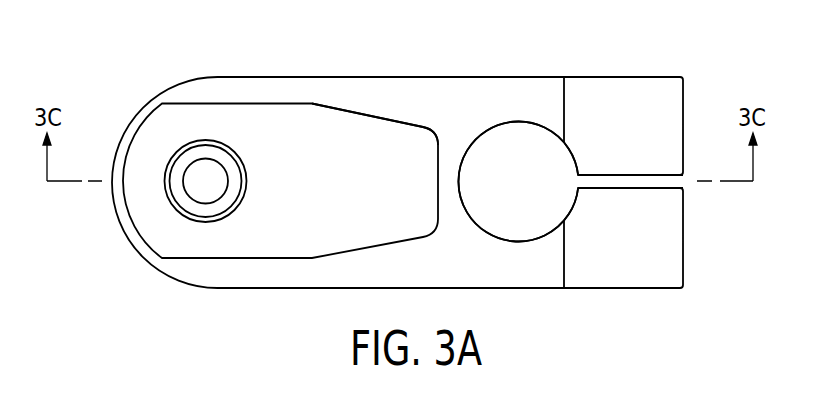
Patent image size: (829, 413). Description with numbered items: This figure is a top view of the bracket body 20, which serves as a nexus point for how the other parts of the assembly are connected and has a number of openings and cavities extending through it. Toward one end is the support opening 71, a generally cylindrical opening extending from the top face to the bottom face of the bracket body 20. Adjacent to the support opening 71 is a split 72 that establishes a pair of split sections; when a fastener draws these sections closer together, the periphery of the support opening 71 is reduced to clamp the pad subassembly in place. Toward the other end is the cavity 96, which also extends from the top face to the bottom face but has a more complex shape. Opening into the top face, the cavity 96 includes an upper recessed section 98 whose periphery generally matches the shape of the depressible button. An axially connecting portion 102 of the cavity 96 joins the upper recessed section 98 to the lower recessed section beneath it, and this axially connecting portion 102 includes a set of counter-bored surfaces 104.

The bracket body 20 is at (668, 48).
The support opening 71 is at (473, 143).
The split 72 is at (682, 182).
The cavity 96 is at (267, 233).
The upper recessed section 98 is at (342, 125).
The axially connecting portion 102 is at (192, 196).
The counter-bored surfaces 104 is at (225, 161).